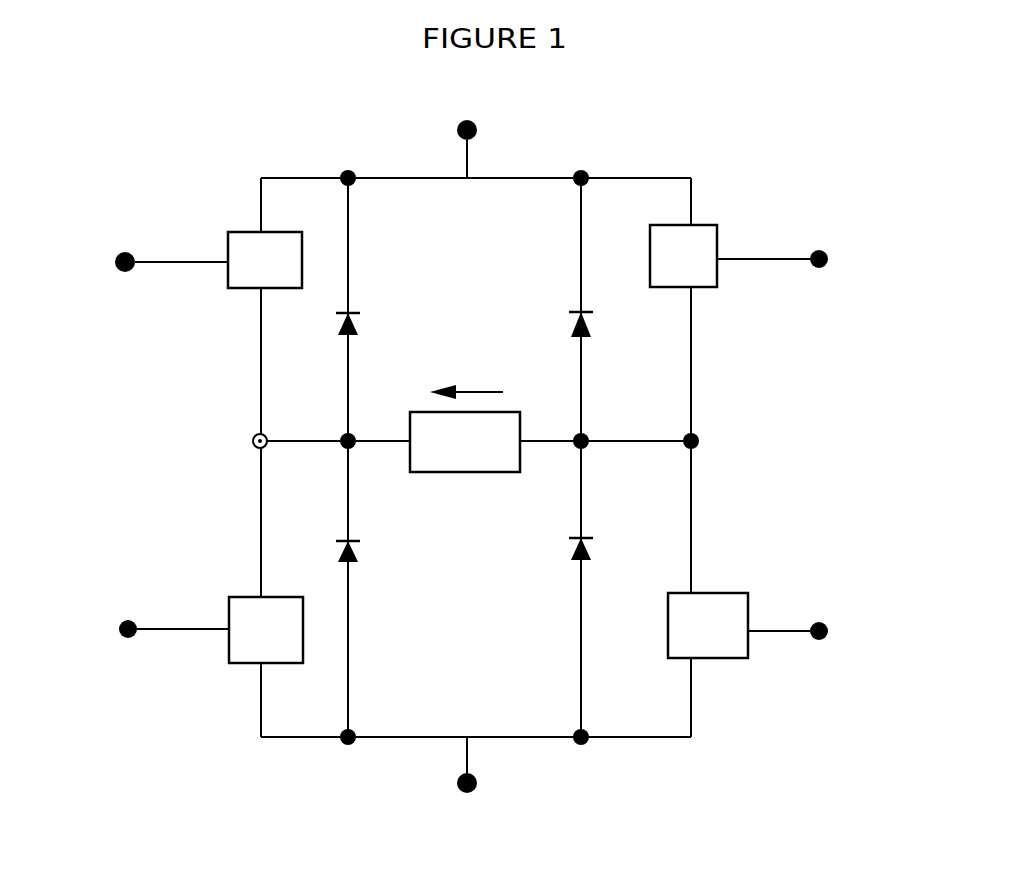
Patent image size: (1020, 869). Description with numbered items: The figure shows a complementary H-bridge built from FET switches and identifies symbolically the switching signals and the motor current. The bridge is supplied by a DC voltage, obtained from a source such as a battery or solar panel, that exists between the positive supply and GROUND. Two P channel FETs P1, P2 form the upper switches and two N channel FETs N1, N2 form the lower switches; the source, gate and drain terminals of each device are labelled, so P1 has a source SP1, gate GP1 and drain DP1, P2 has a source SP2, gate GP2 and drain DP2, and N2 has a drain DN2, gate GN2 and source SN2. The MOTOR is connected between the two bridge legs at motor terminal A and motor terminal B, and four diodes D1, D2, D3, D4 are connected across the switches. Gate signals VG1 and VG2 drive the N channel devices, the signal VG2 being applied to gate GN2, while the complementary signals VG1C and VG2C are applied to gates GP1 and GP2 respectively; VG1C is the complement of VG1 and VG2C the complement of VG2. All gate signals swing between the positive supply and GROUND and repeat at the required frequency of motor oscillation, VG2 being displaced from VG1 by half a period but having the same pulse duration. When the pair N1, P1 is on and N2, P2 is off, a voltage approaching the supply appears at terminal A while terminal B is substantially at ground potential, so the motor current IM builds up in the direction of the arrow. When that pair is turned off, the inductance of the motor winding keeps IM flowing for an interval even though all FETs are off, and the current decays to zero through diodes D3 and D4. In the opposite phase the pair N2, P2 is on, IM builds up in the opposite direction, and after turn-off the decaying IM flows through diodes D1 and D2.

The P channel FET P1 is at (683, 256).
The P channel FET P2 is at (265, 260).
The N channel FET N1 is at (266, 630).
The N channel FET N2 is at (708, 625).
The diode D1 is at (370, 556).
The diode D2 is at (554, 320).
The diode D3 is at (559, 553).
The diode D4 is at (370, 322).
The motor MOTOR is at (465, 442).
The motor terminal A is at (379, 432).
The motor terminal B is at (550, 432).
The motor current IM is at (488, 389).
The ground GROUND is at (482, 784).
The gate signal VG1 is at (141, 634).
The gate signal VG2 is at (823, 631).
The gate signal VG1C is at (817, 255).
The gate signal VG2C is at (128, 263).
The source terminal of P1 SP1 is at (700, 212).
The source terminal of P2 SP2 is at (252, 220).
The gate terminal of P1 GP1 is at (725, 252).
The gate terminal of P2 GP2 is at (217, 252).
The drain terminal of P1 DP1 is at (697, 292).
The drain terminal of P2 DP2 is at (247, 300).
The drain terminal of N2 DN2 is at (707, 583).
The gate terminal of N2 GN2 is at (755, 637).
The source terminal of N2 SN2 is at (698, 670).